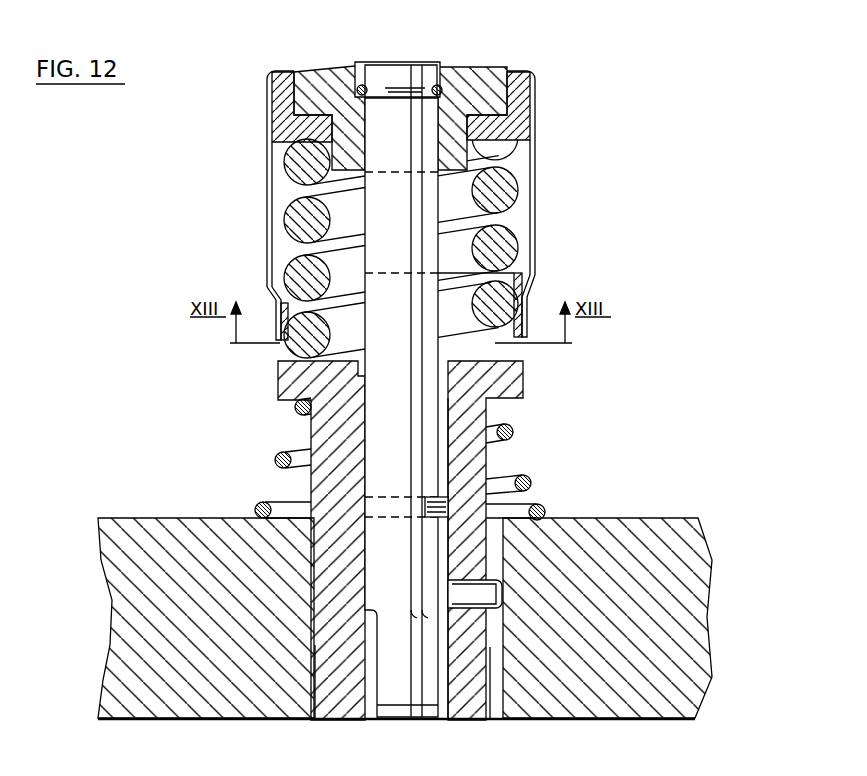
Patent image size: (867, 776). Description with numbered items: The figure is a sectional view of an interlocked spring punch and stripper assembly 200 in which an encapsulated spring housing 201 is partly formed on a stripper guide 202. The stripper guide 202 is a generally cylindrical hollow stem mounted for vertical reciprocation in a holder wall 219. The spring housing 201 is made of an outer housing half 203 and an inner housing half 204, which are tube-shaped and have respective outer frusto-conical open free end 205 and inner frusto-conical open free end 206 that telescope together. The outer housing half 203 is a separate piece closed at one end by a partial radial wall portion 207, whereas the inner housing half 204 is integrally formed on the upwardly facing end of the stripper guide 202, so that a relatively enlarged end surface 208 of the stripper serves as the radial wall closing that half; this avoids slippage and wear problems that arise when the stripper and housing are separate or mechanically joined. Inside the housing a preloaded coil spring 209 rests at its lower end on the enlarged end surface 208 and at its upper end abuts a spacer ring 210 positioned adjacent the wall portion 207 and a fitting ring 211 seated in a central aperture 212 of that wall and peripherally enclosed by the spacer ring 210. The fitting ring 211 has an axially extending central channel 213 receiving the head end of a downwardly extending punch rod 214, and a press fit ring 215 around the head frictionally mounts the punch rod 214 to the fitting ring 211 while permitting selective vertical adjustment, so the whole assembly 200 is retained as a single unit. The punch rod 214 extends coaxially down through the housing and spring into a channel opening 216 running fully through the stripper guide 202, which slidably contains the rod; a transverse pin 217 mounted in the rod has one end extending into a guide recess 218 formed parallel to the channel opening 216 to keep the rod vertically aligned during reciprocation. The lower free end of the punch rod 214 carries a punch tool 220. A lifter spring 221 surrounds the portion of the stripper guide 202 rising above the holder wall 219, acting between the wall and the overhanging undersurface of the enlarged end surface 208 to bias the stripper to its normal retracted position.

The interlocked spring punch and stripper assembly 200 is at (405, 203).
The encapsulated spring housing 201 is at (264, 200).
The stripper guide 202 is at (310, 428).
The outer housing half 203 is at (533, 148).
The inner housing half 204 is at (283, 348).
The outer frusto-conical open free end 205 is at (530, 296).
The inner frusto-conical open free end 206 is at (279, 291).
The partial radial wall portion 207 is at (283, 70).
The enlarged end surface 208 is at (512, 388).
The coil spring 209 is at (510, 245).
The spacer ring 210 is at (520, 102).
The fitting ring 211 is at (338, 78).
The central aperture 212 is at (502, 70).
The axially extending central channel 213 is at (437, 84).
The punch rod 214 is at (418, 301).
The press fit ring 215 is at (366, 85).
The channel opening 216 is at (311, 466).
The transverse pin 217 is at (426, 520).
The guide recess 218 is at (447, 453).
The holder wall 219 is at (688, 608).
The punch tool 220 is at (410, 692).
The lifter spring 221 is at (531, 484).